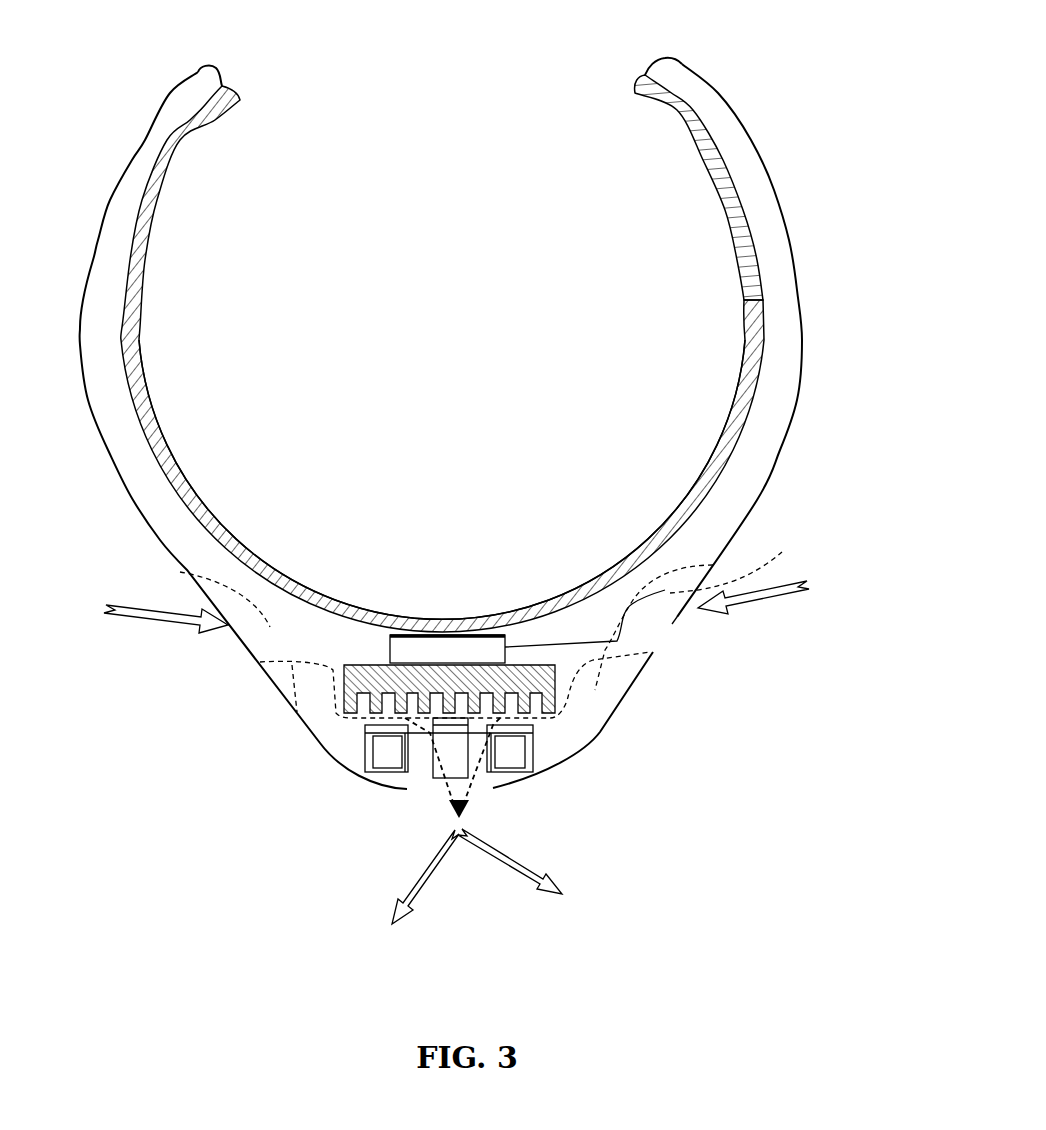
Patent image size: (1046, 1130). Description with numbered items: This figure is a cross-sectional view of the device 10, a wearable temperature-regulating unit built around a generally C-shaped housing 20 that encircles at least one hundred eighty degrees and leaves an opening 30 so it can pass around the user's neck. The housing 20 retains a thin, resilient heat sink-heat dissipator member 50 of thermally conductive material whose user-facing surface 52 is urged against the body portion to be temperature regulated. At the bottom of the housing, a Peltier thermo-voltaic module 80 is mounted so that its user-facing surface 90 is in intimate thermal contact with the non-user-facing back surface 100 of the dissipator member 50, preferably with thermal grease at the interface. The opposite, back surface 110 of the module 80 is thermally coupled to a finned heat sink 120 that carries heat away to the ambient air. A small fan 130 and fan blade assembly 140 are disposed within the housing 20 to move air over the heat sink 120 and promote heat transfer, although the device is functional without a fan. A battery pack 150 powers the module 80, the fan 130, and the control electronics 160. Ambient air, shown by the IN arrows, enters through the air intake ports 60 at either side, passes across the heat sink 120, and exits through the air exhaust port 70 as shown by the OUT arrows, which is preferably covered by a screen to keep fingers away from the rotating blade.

The device 10 is at (822, 156).
The housing 20 is at (88, 250).
The opening 30 is at (422, 90).
The heat sink-heat dissipator member 50 is at (172, 410).
The user-facing surface 52 is at (188, 487).
The air intake port 60 is at (243, 645).
The air exhaust port 70 is at (440, 795).
The Peltier thermo-voltaic module 80 is at (460, 648).
The user-facing surface of T-V module 90 is at (417, 635).
The non-user-facing surface of dissipator member 100 is at (338, 620).
The opposite surface of T-V module 110 is at (417, 660).
The finned heat sink 120 is at (338, 683).
The fan 130 is at (458, 750).
The fan blade assembly 140 is at (533, 745).
The battery pack 150 is at (756, 553).
The control electronics 160 is at (757, 568).